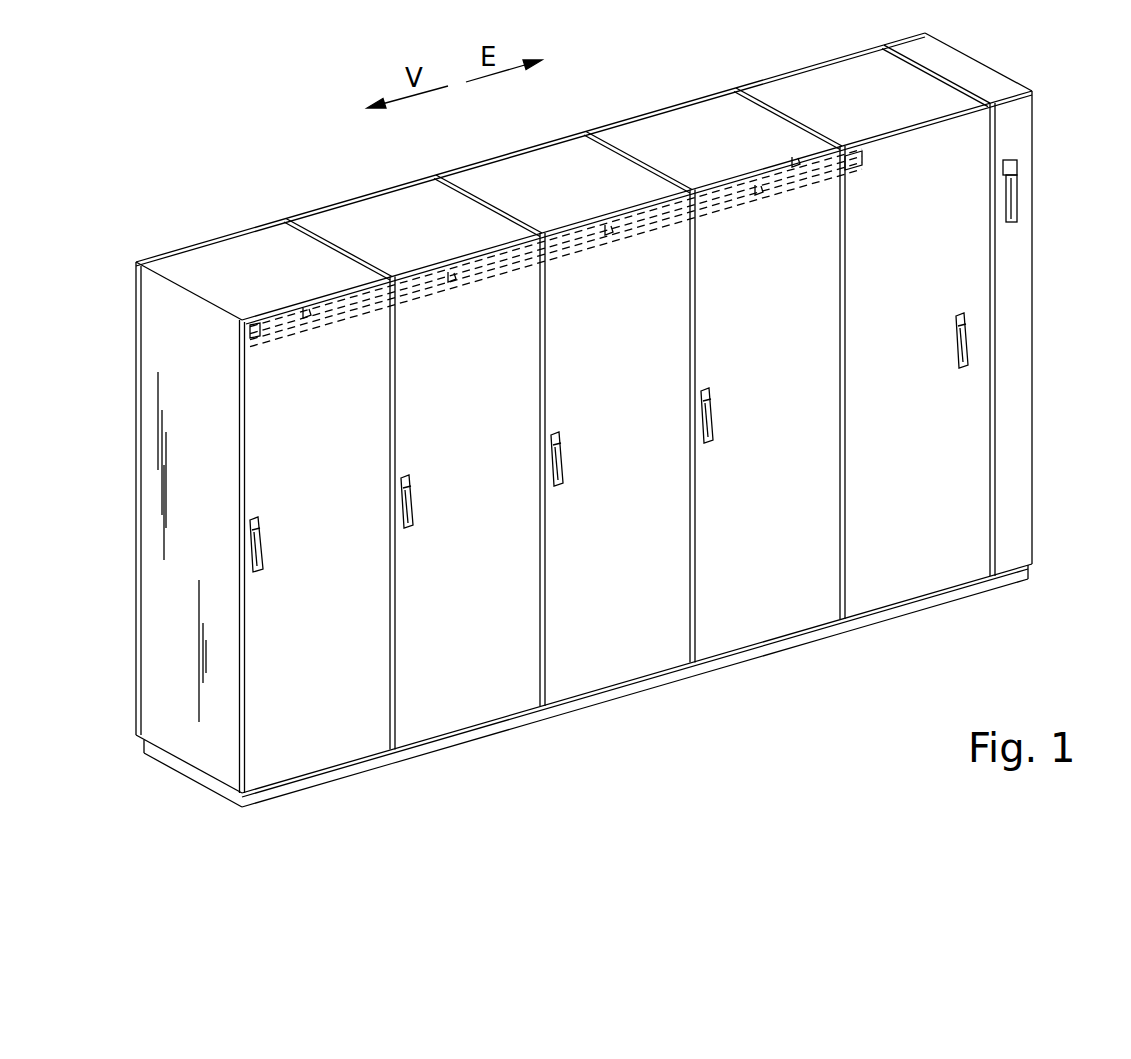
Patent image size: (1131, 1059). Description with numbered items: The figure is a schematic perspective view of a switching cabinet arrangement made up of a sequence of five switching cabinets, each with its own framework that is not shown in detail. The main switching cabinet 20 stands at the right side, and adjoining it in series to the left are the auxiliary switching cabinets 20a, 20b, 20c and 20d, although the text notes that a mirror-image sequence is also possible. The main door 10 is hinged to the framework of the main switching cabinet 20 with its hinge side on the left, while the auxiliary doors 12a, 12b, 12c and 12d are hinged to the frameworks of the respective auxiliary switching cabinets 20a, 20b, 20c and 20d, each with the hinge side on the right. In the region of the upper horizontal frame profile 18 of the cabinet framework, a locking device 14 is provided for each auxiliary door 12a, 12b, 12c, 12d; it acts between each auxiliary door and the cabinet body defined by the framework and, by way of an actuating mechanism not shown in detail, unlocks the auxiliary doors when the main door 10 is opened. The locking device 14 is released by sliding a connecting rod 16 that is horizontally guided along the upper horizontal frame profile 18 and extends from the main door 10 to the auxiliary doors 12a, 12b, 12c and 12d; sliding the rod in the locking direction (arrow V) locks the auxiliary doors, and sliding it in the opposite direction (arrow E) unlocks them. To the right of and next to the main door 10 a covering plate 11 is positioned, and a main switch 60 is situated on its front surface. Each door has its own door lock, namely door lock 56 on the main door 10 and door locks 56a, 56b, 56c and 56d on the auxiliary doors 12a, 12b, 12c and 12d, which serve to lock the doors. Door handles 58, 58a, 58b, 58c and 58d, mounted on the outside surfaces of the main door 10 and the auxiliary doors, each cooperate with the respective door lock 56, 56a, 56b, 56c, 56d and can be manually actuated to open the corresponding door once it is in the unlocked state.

The main door 10 is at (947, 550).
The covering plate 11 is at (1017, 403).
The auxiliary door 12a is at (800, 595).
The auxiliary door 12b is at (645, 640).
The auxiliary door 12c is at (495, 680).
The auxiliary door 12d is at (330, 728).
The locking device 14 is at (438, 272).
The connecting rod 16 is at (792, 158).
The upper horizontal frame profile 18 is at (277, 290).
The main switching cabinet 20 is at (918, 602).
The auxiliary switching cabinet 20a is at (770, 655).
The auxiliary switching cabinet 20b is at (617, 700).
The auxiliary switching cabinet 20c is at (462, 735).
The auxiliary switching cabinet 20d is at (300, 780).
The door lock 56 is at (957, 323).
The door lock 56a is at (713, 398).
The door lock 56b is at (563, 442).
The door lock 56c is at (413, 485).
The door lock 56d is at (263, 530).
The door handle 58 is at (960, 352).
The door handle 58a is at (708, 430).
The door handle 58b is at (558, 472).
The door handle 58c is at (408, 515).
The door handle 58d is at (258, 557).
The main switch 60 is at (1018, 205).